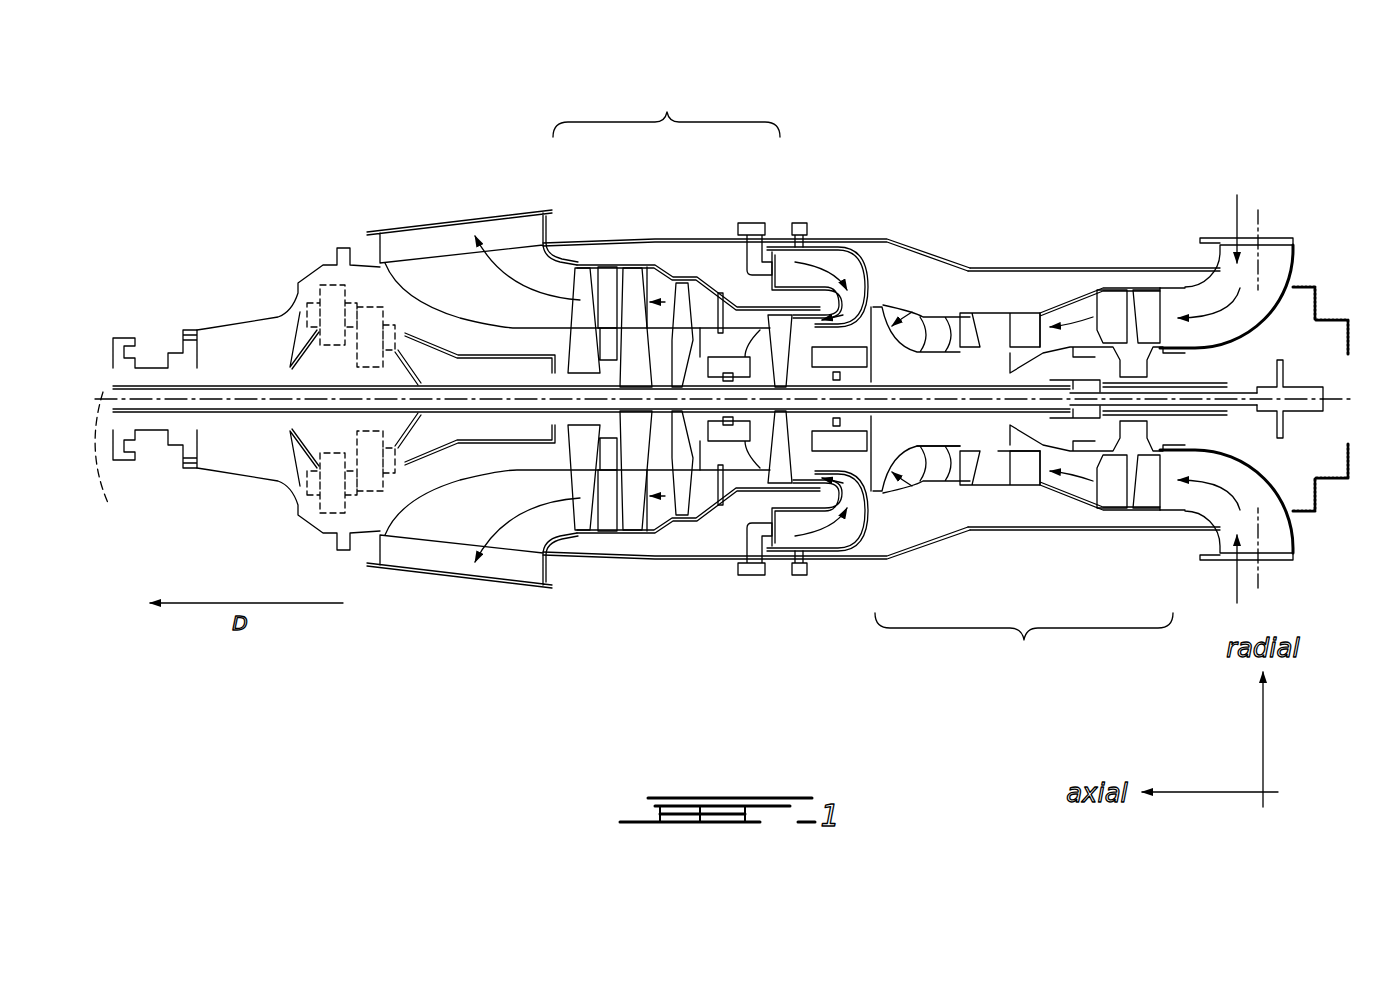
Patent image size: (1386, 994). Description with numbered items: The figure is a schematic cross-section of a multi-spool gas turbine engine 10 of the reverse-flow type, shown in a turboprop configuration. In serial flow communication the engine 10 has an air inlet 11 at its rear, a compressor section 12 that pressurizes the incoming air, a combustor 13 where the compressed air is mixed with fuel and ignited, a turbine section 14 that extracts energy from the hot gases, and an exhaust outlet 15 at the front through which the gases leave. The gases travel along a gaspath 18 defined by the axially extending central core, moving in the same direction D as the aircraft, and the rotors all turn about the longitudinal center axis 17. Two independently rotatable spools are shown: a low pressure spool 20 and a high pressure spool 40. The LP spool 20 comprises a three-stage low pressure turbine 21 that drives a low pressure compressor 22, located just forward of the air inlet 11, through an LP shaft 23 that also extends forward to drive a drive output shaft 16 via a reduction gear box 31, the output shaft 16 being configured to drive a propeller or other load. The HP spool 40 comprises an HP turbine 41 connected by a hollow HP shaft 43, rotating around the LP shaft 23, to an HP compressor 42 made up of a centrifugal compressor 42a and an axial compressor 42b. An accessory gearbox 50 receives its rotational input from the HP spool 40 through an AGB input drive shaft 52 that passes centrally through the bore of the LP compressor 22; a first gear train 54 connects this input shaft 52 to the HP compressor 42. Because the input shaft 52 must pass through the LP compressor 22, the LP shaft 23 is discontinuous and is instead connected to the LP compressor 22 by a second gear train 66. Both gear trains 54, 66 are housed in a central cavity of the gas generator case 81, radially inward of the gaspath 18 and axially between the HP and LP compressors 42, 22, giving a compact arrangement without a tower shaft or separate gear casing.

The gas turbine engine 10 is at (312, 180).
The air inlet 11 is at (1272, 248).
The compressor section 12 is at (1024, 641).
The combustor 13 is at (784, 262).
The turbine section 14 is at (666, 109).
The exhaust outlet 15 is at (447, 232).
The drive output shaft 16 is at (118, 332).
The longitudinal center axis 17 is at (108, 451).
The gaspath 18 is at (1027, 325).
The low pressure spool 20 is at (952, 410).
The low pressure turbine 21 is at (632, 290).
The low pressure compressor 22 is at (1143, 303).
The LP shaft 23 is at (668, 470).
The reduction gear box 31 is at (310, 298).
The high pressure spool 40 is at (757, 327).
The HP turbine 41 is at (768, 435).
The HP compressor 42 is at (903, 310).
The centrifugal compressor 42a is at (926, 495).
The axial compressor 42b is at (998, 460).
The HP shaft 43 is at (800, 380).
The accessory gearbox 50 is at (1338, 355).
The AGB input drive shaft 52 is at (1230, 388).
The first gear train 54 is at (1075, 350).
The second gear train 66 is at (1087, 445).
The gas generator case 81 is at (1053, 264).